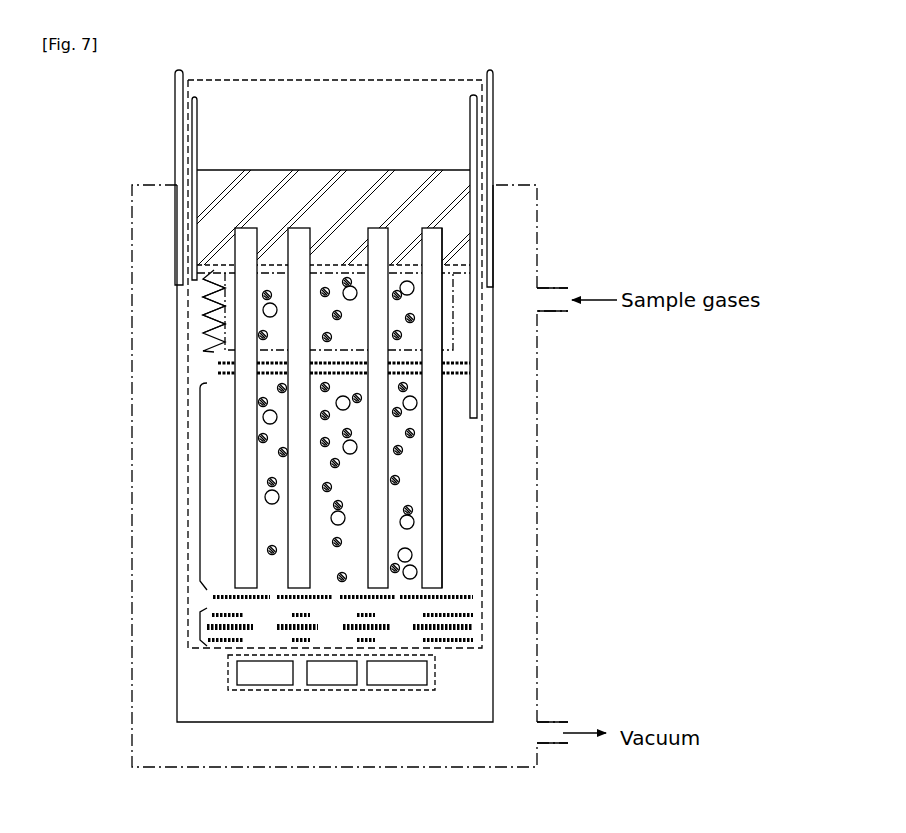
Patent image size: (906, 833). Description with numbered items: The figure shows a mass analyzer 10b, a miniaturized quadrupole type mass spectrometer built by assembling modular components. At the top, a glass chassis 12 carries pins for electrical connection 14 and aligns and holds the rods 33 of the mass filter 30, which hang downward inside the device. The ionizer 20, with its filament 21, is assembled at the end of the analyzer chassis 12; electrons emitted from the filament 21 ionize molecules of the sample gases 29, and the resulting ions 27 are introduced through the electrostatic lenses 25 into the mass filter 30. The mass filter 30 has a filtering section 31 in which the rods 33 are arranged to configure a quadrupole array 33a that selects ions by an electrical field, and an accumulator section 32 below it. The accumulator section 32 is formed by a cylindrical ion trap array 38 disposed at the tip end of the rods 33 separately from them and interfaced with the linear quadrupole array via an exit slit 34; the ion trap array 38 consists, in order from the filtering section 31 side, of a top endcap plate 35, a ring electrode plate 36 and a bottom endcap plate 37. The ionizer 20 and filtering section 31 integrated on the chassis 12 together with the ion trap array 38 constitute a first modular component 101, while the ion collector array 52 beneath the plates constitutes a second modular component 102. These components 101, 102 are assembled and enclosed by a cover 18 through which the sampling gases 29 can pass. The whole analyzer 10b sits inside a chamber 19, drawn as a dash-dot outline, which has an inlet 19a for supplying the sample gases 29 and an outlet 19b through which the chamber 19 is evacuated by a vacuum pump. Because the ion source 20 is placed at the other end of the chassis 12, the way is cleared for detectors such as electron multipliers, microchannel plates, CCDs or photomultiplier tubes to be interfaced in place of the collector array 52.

The mass analyzer 10b is at (513, 162).
The glass chassis 12 is at (213, 198).
The pins for electrical connection 14 is at (175, 135).
The cover 18 is at (175, 418).
The chamber 19 is at (540, 380).
The inlet 19a is at (558, 291).
The outlet 19b is at (547, 745).
The ionizer 20 is at (192, 313).
The filament 21 is at (205, 305).
The electrostatic lenses 25 is at (222, 365).
The ions 27 is at (265, 290).
The sample gases 29 is at (598, 298).
The mass filter 30 is at (470, 521).
The filtering section 31 is at (200, 497).
The accumulator section 32 is at (205, 625).
The rods 33 is at (442, 455).
The quadrupole array 33a is at (458, 489).
The exit slit 34 is at (455, 597).
The top endcap plate 35 is at (465, 613).
The ring electrode plate 36 is at (475, 628).
The bottom endcap plate 37 is at (470, 647).
The ion trap array 38 is at (431, 589).
The ion collector array 52 is at (258, 678).
The first modular component 101 is at (186, 452).
The second modular component 102 is at (228, 670).